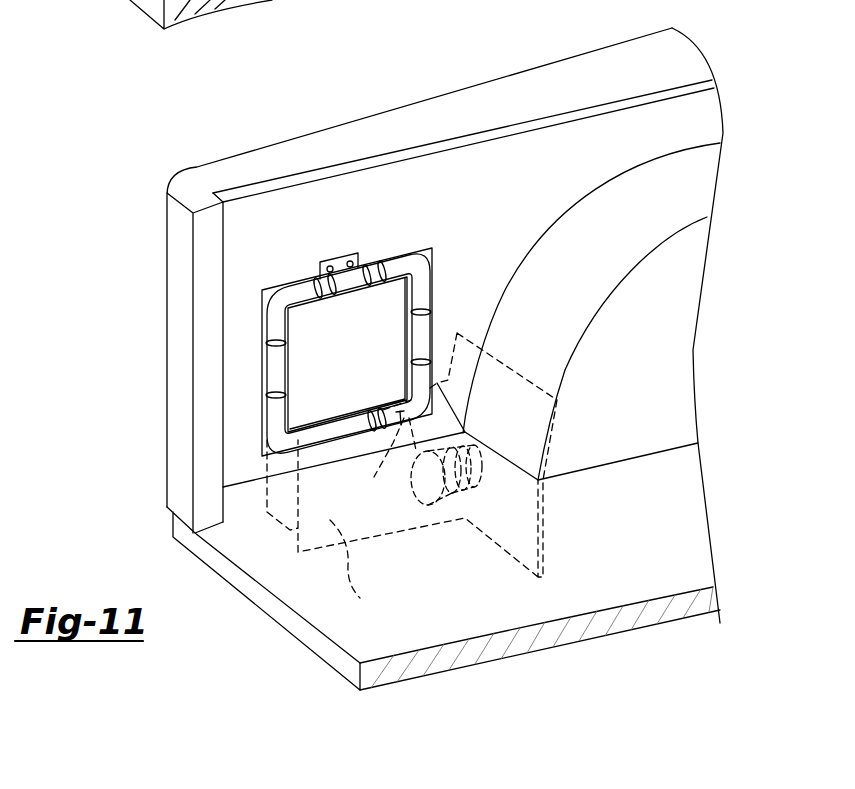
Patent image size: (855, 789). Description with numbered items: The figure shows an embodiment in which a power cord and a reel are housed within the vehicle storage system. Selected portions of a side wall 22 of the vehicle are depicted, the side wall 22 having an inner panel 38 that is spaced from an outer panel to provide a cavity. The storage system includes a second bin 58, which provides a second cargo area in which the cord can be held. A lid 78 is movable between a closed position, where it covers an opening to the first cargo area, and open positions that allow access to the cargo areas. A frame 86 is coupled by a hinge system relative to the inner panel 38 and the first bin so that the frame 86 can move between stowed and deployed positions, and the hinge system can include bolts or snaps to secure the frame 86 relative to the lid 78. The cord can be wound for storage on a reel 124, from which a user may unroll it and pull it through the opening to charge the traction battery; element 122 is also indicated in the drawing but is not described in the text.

The side wall 22 is at (426, 77).
The inner panel 38 is at (547, 167).
The second bin 58 is at (364, 600).
The lid 78 is at (317, 388).
The frame 86 is at (281, 355).
The fluid line 122 is at (372, 478).
The reel 124 is at (407, 507).